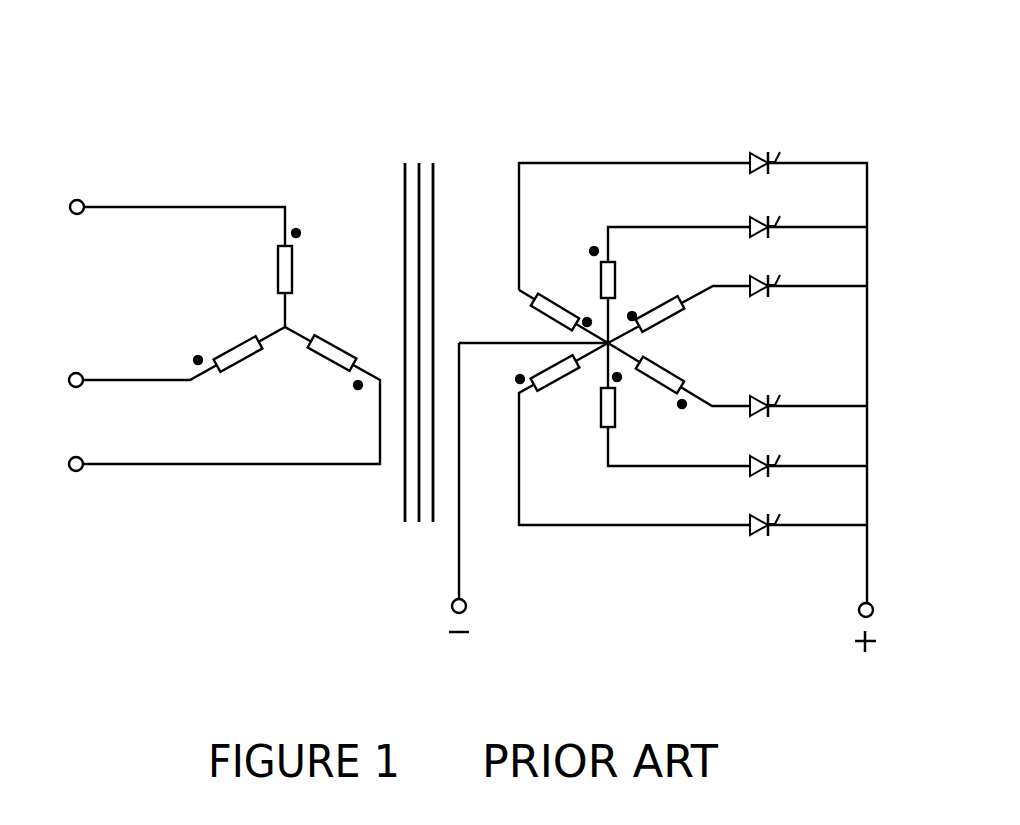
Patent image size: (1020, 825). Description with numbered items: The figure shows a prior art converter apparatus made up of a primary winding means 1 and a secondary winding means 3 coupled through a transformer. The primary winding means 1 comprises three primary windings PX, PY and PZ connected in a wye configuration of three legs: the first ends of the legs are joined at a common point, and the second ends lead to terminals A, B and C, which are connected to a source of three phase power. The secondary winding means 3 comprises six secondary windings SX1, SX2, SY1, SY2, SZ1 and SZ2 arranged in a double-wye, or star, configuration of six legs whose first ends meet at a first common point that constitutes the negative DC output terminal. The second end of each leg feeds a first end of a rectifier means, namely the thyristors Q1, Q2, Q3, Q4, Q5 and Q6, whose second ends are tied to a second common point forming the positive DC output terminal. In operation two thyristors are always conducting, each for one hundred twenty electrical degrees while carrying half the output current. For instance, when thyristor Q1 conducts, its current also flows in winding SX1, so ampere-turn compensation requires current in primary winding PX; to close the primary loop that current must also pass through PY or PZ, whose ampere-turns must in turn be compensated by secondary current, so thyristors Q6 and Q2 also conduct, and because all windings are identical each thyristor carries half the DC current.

The primary winding means 1 is at (220, 165).
The secondary winding means 3 is at (649, 152).
The primary winding PX is at (304, 261).
The primary winding PY is at (335, 355).
The primary winding PZ is at (230, 368).
The secondary winding SX1 is at (626, 272).
The secondary winding SX2 is at (633, 406).
The secondary winding SY1 is at (679, 382).
The secondary winding SY2 is at (535, 315).
The secondary winding SZ1 is at (547, 387).
The secondary winding SZ2 is at (675, 319).
The thyristor Q1 is at (787, 218).
The thyristor Q2 is at (787, 278).
The thyristor Q3 is at (787, 398).
The thyristor Q4 is at (787, 458).
The thyristor Q5 is at (787, 517).
The thyristor Q6 is at (787, 155).